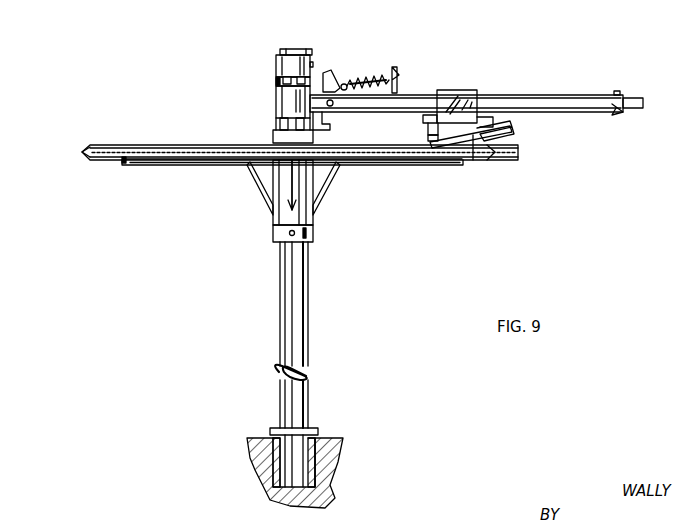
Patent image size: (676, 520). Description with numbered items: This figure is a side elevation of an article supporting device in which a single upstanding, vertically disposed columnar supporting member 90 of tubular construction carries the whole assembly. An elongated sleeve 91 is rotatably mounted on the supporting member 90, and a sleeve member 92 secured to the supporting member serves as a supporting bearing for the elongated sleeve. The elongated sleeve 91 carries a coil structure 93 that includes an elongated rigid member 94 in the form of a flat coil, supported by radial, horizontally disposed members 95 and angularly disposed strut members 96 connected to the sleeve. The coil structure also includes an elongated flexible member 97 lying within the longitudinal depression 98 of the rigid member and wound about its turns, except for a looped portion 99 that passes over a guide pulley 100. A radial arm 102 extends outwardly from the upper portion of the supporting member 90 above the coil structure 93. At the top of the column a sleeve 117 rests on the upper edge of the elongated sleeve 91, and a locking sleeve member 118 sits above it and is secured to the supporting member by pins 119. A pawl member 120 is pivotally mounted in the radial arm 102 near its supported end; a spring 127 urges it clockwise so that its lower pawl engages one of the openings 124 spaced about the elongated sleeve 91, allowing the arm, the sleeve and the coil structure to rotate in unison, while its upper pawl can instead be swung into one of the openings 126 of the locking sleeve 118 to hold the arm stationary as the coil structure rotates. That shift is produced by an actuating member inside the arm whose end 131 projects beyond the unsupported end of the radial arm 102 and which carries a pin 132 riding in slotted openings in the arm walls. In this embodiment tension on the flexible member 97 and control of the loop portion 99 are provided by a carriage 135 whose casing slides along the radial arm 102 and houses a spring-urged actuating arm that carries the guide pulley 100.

The columnar supporting member 90 is at (308, 352).
The elongated sleeve 91 is at (315, 217).
The sleeve member 92 is at (272, 238).
The coil structure 93 is at (172, 123).
The elongated rigid member 94 is at (92, 160).
The radial horizontally disposed members 95 is at (190, 165).
The angularly disposed strut members 96 is at (262, 184).
The elongated flexible member 97 is at (226, 165).
The longitudinal depression 98 is at (86, 150).
The looped portion 99 is at (473, 160).
The guide pulley 100 is at (514, 140).
The radial arm 102 is at (582, 94).
The sleeve 117 is at (276, 102).
The locking sleeve member 118 is at (277, 72).
The pins 119 is at (283, 55).
The pawl member 120 is at (330, 119).
The openings 124 is at (280, 127).
The openings 126 is at (276, 83).
The spring 127 is at (384, 74).
The end of actuating member 131 is at (641, 96).
The pin 132 is at (619, 91).
The carriage 135 is at (463, 84).